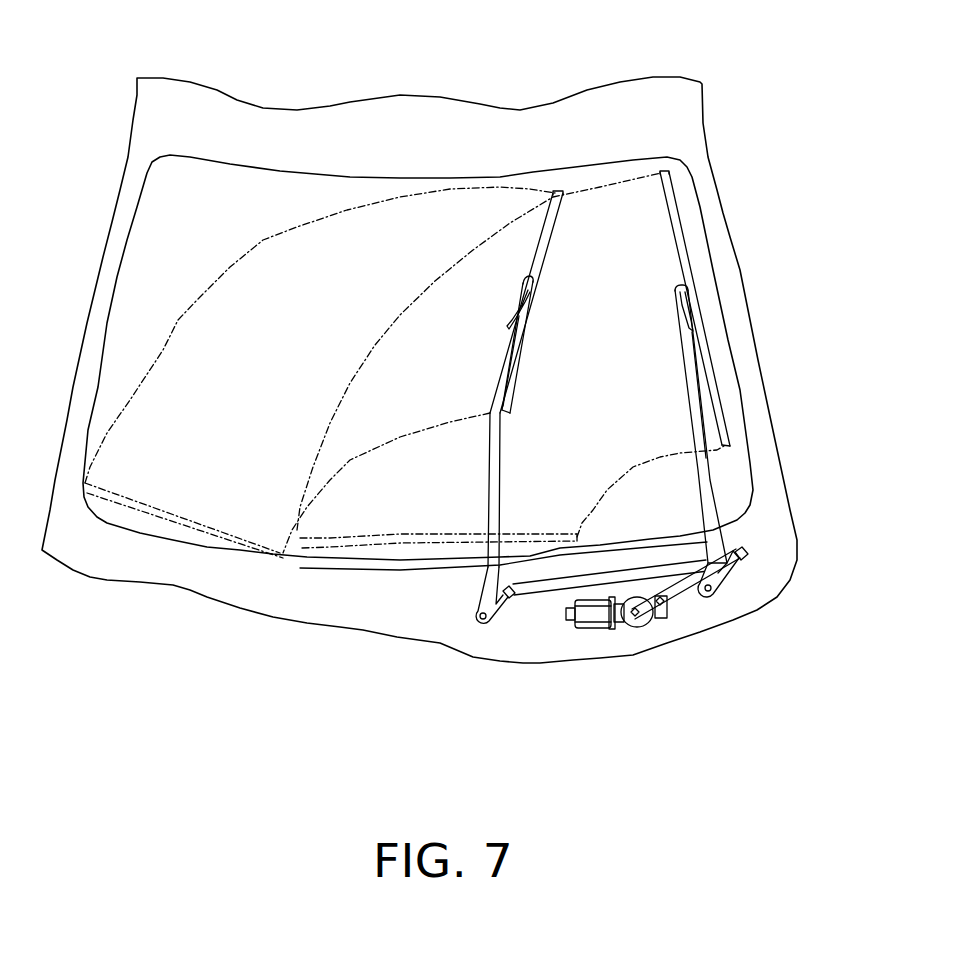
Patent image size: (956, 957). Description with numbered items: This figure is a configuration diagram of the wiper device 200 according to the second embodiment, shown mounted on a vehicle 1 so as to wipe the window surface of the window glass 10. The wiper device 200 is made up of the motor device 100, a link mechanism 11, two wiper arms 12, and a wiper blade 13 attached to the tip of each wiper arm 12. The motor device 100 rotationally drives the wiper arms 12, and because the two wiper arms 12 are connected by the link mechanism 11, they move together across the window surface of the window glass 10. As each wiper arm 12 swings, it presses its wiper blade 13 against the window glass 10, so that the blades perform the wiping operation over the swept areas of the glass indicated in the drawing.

The vehicle 1 is at (714, 111).
The windshield 10 is at (234, 188).
The wiper device 11 is at (533, 614).
The wiper arm 12 is at (491, 522).
The wiper blade 13 is at (550, 245).
The wiper motor 100 is at (583, 618).
The drive unit 200 is at (593, 647).